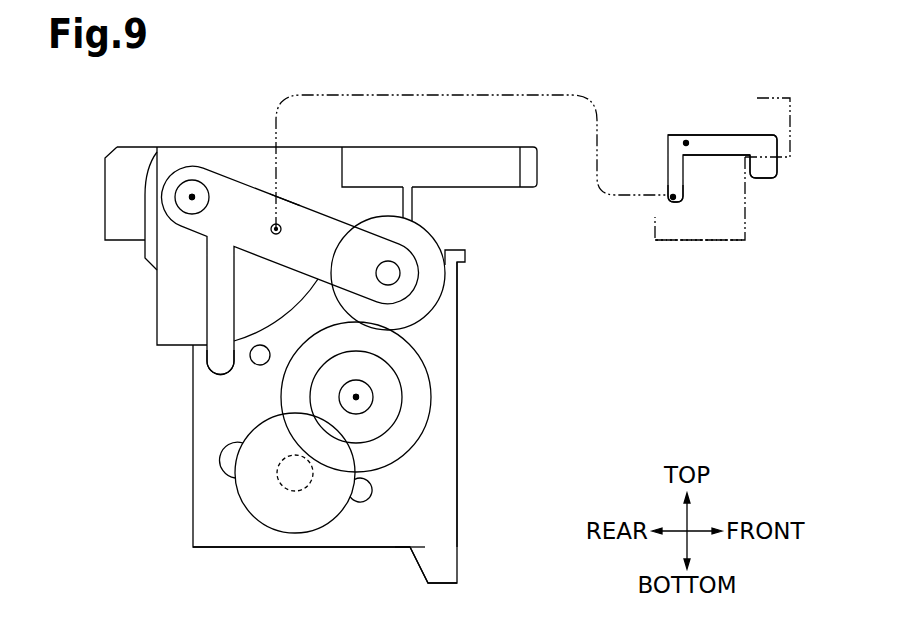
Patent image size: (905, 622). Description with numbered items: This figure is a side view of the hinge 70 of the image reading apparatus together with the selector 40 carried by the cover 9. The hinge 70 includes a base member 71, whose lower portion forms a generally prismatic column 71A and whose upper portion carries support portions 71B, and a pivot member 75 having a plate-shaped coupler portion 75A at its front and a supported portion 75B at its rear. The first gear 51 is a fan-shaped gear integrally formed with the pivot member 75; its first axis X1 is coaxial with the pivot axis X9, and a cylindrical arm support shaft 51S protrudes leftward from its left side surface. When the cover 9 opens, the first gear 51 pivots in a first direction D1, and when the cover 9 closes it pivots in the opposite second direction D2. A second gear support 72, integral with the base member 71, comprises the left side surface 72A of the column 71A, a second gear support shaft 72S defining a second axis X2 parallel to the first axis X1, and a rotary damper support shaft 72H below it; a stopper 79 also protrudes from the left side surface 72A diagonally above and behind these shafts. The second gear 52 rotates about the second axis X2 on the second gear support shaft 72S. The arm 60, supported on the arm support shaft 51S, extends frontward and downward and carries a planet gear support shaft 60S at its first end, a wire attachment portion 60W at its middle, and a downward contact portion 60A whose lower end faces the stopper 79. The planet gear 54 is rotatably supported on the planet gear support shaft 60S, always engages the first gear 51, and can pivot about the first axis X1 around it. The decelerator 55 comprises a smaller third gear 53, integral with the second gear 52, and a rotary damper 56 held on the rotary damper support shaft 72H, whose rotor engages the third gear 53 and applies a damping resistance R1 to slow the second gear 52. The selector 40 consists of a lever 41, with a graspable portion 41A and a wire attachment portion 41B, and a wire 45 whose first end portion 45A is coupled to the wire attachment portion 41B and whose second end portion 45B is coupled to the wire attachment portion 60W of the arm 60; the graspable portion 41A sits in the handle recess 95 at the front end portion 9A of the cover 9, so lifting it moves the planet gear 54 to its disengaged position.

The cover 9 is at (718, 243).
The front end portion 9A is at (787, 132).
The selector 40 is at (680, 115).
The lever 41 is at (727, 132).
The graspable portion 41A is at (763, 176).
The wire attachment portion 41B is at (680, 194).
The wire 45 is at (518, 92).
The first end portion 45A is at (658, 196).
The second end portion 45B is at (271, 229).
The first gear 51 is at (337, 217).
The arm support shaft 51S is at (183, 188).
The second gear 52 is at (413, 375).
The third gear 53 is at (390, 398).
The planet gear 54 is at (423, 292).
The decelerator 55 is at (349, 514).
The rotary damper 56 is at (260, 490).
The arm 60 is at (248, 181).
The contact portion 60A is at (217, 357).
The planet gear support shaft 60S is at (386, 266).
The wire attachment portion 60W is at (288, 212).
The hinge 70 is at (170, 463).
The base member 71 is at (460, 489).
The column 71A is at (443, 342).
The support portion 71B is at (145, 248).
The second gear support 72 is at (422, 504).
The left side surface 72A is at (390, 495).
The rotary damper support shaft 72H is at (295, 482).
The second gear support shaft 72S is at (362, 403).
The pivot member 75 is at (113, 146).
The coupler portion 75A is at (522, 181).
The supported portion 75B is at (127, 181).
The stopper 79 is at (258, 366).
The handle recess 95 is at (745, 217).
The first axis X1 is at (192, 197).
The second axis X2 is at (356, 397).
The pivot axis X9 is at (192, 196).
The first direction D1 is at (252, 320).
The second direction D2 is at (267, 278).
The damping resistance R1 is at (287, 429).